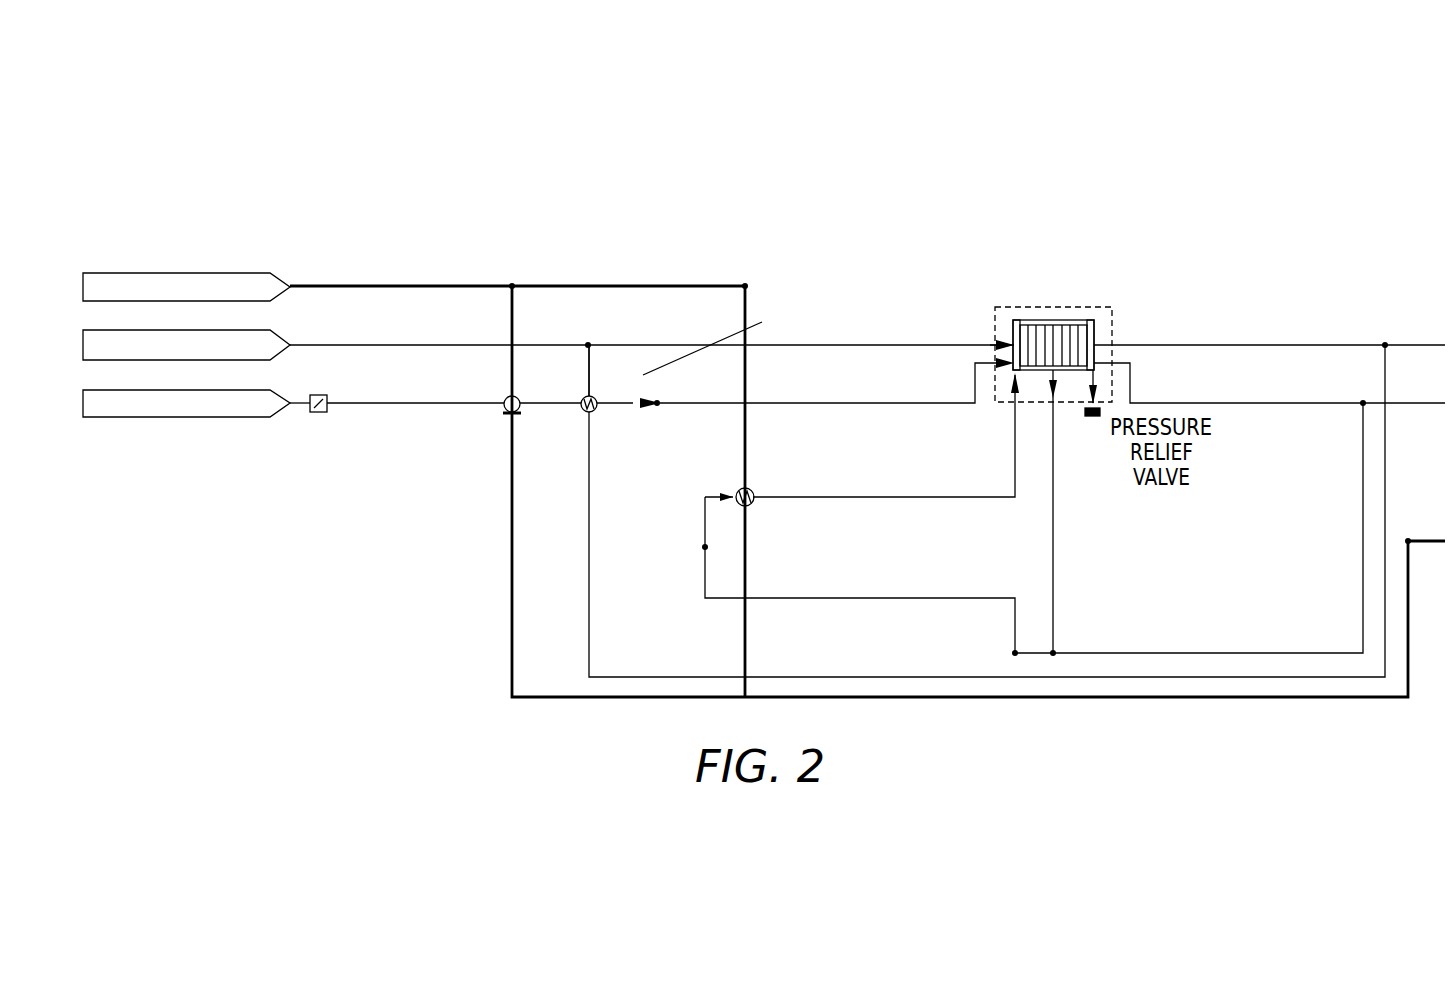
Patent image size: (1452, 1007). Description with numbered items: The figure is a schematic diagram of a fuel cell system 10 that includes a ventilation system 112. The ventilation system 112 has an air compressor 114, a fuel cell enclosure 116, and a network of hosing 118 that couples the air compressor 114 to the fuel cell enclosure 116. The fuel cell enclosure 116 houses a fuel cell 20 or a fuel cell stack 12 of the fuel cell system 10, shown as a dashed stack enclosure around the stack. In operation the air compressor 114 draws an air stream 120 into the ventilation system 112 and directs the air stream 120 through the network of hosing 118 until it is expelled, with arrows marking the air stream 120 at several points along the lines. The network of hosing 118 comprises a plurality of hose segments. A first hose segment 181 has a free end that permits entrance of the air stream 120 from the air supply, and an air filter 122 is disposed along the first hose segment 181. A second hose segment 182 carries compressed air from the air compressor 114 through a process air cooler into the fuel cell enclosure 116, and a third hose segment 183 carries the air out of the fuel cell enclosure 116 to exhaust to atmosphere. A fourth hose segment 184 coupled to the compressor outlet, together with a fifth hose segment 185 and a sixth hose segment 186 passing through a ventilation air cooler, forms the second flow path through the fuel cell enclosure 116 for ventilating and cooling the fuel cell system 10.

The fuel cell system 10 is at (162, 188).
The fuel cell stack 12 is at (1003, 325).
The fuel cell 20 is at (1053, 345).
The ventilation system 112 is at (353, 505).
The air compressor 114 is at (503, 410).
The fuel cell enclosure 116 is at (1112, 318).
The network of hosing 118 is at (555, 548).
The air stream 120 is at (276, 375).
The air filter 122 is at (305, 408).
The first hose segment 181 is at (413, 404).
The second hose segment 182 is at (562, 403).
The third hose segment 183 is at (1213, 403).
The fourth hose segment 184 is at (532, 490).
The fifth hose segment 185 is at (1055, 528).
The sixth hose segment 186 is at (890, 493).